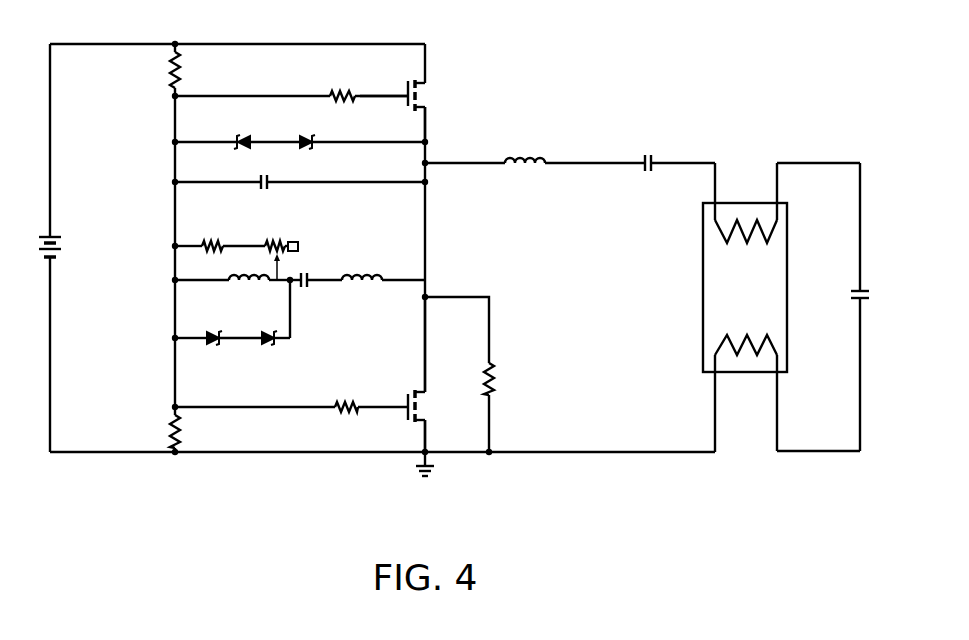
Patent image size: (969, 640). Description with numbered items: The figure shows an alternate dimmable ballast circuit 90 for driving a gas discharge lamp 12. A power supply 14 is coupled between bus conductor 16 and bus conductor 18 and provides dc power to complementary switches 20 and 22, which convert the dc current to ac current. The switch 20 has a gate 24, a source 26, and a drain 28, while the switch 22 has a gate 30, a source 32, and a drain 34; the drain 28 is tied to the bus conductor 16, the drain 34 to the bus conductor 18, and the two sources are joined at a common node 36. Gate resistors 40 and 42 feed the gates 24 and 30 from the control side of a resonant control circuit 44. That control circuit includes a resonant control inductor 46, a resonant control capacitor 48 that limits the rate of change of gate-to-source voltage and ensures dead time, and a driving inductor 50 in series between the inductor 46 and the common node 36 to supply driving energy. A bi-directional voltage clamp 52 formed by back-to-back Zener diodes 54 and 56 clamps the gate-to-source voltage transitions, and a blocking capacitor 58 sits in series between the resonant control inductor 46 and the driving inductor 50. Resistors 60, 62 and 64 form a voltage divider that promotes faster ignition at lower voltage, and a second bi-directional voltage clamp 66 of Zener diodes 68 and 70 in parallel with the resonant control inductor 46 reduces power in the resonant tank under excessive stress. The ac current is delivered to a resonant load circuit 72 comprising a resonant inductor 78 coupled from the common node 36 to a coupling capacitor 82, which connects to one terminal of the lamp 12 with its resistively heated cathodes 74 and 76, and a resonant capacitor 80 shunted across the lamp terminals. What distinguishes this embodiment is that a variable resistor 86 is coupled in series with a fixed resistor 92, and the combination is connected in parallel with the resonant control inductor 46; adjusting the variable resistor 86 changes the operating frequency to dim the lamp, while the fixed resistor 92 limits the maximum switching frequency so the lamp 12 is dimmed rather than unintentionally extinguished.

The gas discharge lamp 12 is at (822, 243).
The power supply 14 is at (62, 236).
The bus conductor 16 is at (231, 44).
The bus conductor 18 is at (245, 454).
The switch 20 is at (416, 82).
The switch 22 is at (418, 392).
The gate 24 is at (368, 98).
The source 26 is at (427, 122).
The drain 28 is at (428, 62).
The gate 30 is at (388, 408).
The source 32 is at (428, 315).
The drain 34 is at (430, 422).
The common node 36 is at (430, 168).
The gate resistor 40 is at (338, 92).
The gate resistor 42 is at (348, 402).
The resonant control circuit 44 is at (165, 492).
The resonant control inductor 46 is at (240, 278).
The resonant control capacitor 48 is at (272, 186).
The driving inductor 50 is at (368, 278).
The bi-directional voltage clamp 52 is at (228, 133).
The Zener diode 54 is at (237, 148).
The Zener diode 56 is at (314, 147).
The blocking capacitor 58 is at (310, 285).
The resistor 60 is at (168, 72).
The resistor 62 is at (171, 428).
The resistor 64 is at (492, 368).
The second bi-directional voltage clamp 66 is at (195, 360).
The Zener diode 68 is at (213, 332).
The Zener diode 70 is at (266, 332).
The resonant load circuit 72 is at (860, 460).
The resistively heated cathode 74 is at (746, 235).
The resistively heated cathode 76 is at (748, 335).
The resonant inductor 78 is at (528, 160).
The resonant capacitor 80 is at (858, 302).
The coupling capacitor 82 is at (652, 160).
The variable resistor 86 is at (298, 251).
The dimmable ballast circuit 90 is at (566, 82).
The fixed resistor 92 is at (219, 241).